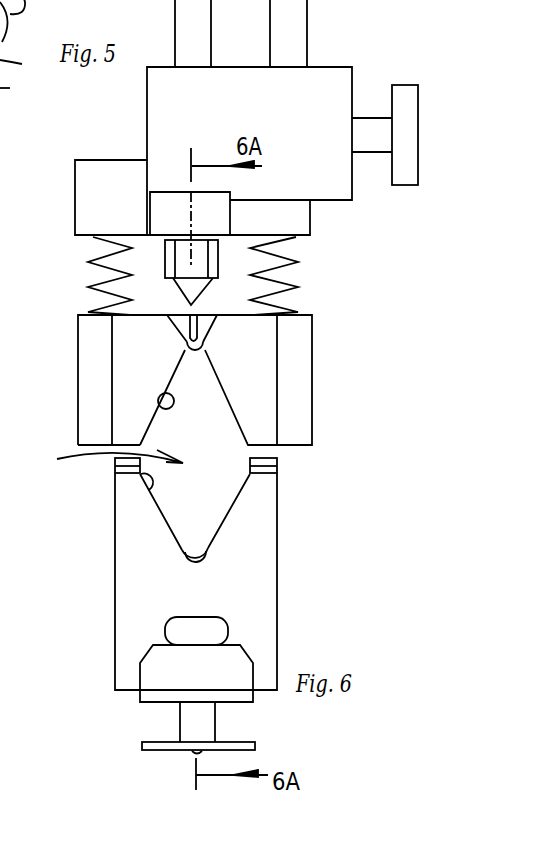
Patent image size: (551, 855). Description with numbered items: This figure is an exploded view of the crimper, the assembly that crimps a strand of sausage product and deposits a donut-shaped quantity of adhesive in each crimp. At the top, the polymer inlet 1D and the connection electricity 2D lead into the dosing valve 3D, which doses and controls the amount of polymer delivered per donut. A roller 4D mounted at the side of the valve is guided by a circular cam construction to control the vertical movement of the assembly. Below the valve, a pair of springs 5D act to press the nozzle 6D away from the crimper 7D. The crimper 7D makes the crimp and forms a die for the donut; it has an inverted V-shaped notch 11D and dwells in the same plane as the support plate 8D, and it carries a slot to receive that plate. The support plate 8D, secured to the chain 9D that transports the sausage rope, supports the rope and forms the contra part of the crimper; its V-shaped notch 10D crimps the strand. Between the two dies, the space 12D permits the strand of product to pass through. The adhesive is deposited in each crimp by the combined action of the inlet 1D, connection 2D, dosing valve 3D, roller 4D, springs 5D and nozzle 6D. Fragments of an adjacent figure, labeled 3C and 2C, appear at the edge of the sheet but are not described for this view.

In FIG. 6, the polymer inlet 1D is at (202, 14).
In FIG. 6, the connection electricity 2D is at (290, 33).
In FIG. 6, the dosing valve 3D is at (152, 122).
In FIG. 6, the roller 4D is at (398, 100).
In FIG. 6, the spring 5D is at (93, 258).
In FIG. 6, the nozzle 6D is at (170, 252).
In FIG. 6, the crimper 7D is at (88, 357).
In FIG. 6, the support plate 8D is at (125, 505).
In FIG. 6, the chain 9D is at (188, 725).
In FIG. 6, the V-shaped notch 10D is at (128, 470).
In FIG. 6, the V-shaped notch 11D is at (160, 396).
In FIG. 6, the space 12D is at (104, 460).
In FIG. 5, the housing 3C is at (20, 67).
In FIG. 5, the rod 2C is at (15, 91).